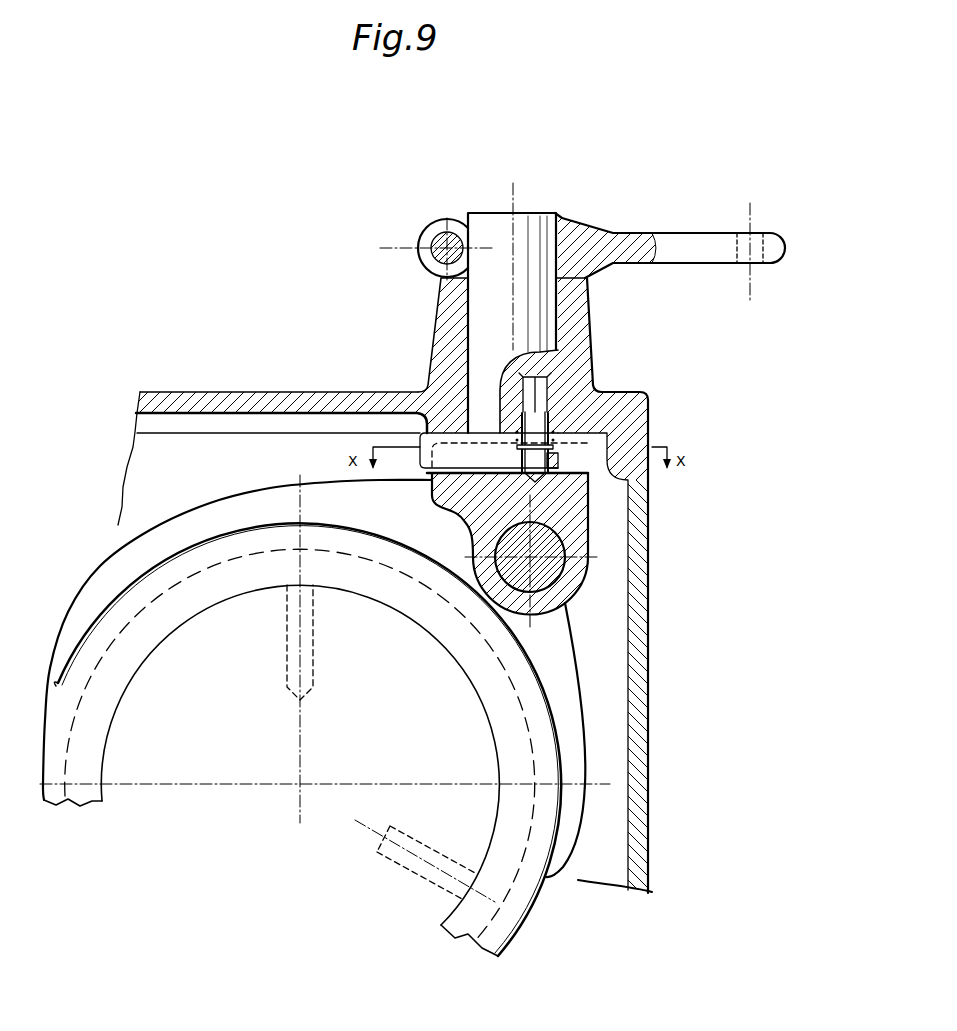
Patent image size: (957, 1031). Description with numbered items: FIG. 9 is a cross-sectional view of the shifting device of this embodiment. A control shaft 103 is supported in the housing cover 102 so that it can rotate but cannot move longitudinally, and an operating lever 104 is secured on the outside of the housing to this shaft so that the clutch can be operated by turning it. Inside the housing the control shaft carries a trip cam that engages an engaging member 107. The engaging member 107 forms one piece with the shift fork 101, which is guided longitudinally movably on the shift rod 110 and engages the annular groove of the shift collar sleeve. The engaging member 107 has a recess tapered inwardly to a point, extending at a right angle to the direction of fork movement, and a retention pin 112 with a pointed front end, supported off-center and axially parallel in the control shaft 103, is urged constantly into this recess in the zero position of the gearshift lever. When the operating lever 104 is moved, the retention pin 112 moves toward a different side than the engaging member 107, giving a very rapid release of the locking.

The shift fork 101 is at (340, 512).
The housing cover 102 is at (357, 403).
The control shaft 103 is at (488, 303).
The operating lever 104 is at (648, 247).
The engaging member 107 is at (553, 507).
The shift rod 110 is at (543, 576).
The retention pin 112 is at (535, 427).